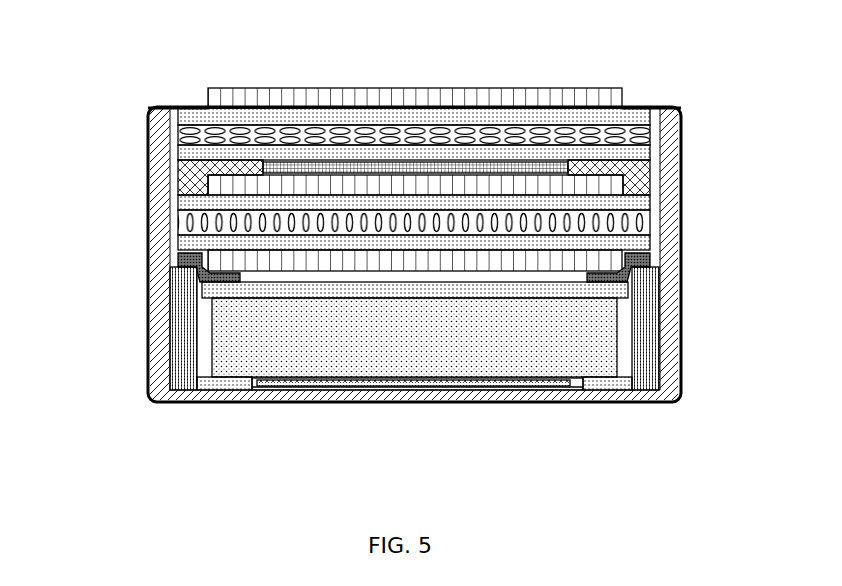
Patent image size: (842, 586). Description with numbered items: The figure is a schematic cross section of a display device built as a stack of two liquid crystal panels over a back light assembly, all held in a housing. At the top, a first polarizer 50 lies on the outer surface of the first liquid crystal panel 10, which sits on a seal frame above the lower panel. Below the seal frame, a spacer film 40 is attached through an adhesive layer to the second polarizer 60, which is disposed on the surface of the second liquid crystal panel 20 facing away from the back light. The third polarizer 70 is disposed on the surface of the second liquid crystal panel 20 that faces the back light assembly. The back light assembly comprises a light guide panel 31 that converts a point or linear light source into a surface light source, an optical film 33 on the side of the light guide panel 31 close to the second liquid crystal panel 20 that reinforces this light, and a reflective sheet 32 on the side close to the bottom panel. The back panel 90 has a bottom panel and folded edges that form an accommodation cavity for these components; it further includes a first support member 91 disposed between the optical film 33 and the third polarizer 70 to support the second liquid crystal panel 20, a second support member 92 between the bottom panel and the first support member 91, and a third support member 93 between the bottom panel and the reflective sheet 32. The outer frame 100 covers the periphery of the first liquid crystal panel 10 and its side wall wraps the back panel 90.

The outer frame 100 is at (149, 386).
The first polarizer 50 is at (228, 98).
The first liquid crystal panel 10 is at (289, 128).
The spacer film 40 is at (350, 163).
The second polarizer 60 is at (415, 185).
The second liquid crystal panel 20 is at (480, 225).
The third polarizer 70 is at (540, 262).
The first support member 91 is at (650, 257).
The second support member 92 is at (650, 318).
The optical film 33 is at (573, 290).
The light guide panel 31 is at (487, 328).
The third support member 93 is at (233, 383).
The reflective sheet 32 is at (398, 390).
The back panel 90 is at (327, 390).